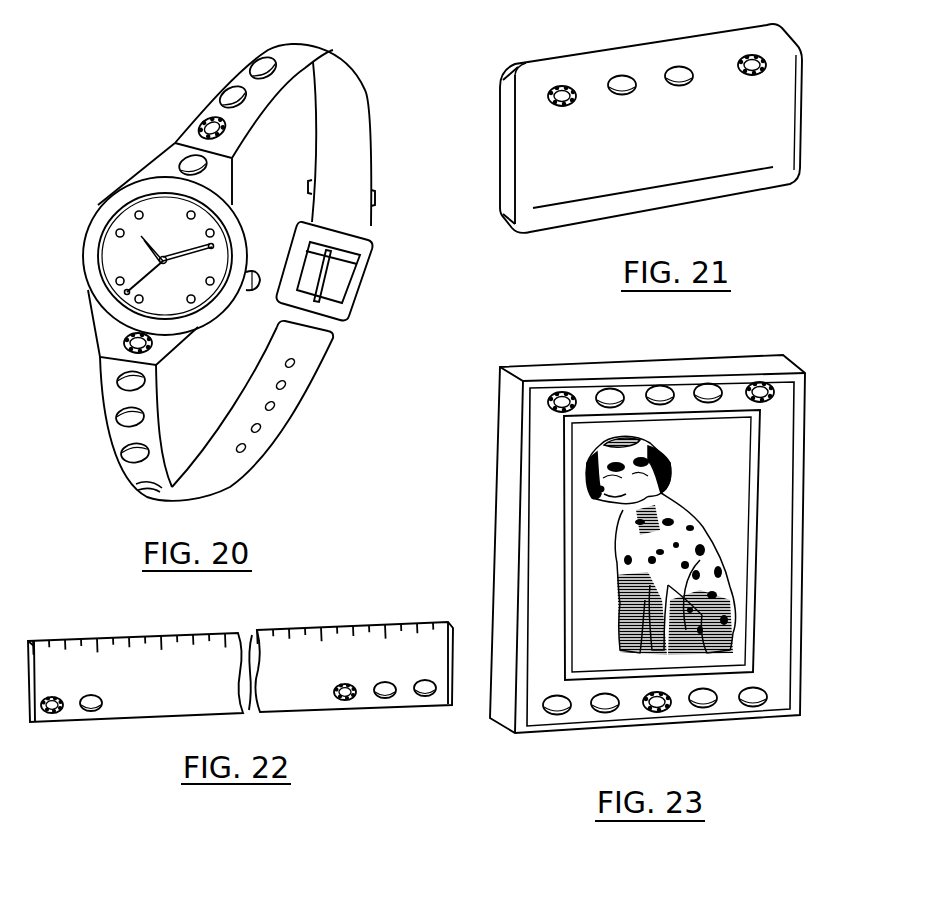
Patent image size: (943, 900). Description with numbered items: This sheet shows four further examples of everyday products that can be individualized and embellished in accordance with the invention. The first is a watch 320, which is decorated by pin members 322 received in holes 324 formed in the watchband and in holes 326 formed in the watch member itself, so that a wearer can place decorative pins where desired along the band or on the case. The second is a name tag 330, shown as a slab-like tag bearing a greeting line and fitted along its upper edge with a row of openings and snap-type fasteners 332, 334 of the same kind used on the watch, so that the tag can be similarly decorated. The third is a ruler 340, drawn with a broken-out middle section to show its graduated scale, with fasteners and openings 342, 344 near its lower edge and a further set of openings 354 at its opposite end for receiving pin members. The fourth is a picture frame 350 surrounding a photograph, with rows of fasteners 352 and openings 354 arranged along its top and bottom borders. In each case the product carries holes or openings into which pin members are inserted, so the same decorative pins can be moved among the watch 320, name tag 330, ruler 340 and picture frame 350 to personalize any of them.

In FIG. 20, the watch 320 is at (92, 264).
In FIG. 20, the pin members 322 is at (125, 415).
In FIG. 20, the holes in the watchband 324 is at (200, 124).
In FIG. 20, the holes in the watch member 326 is at (180, 164).
In FIG. 21, the name tag 330 is at (530, 180).
In FIG. 21, the snap fastener on name tag 332 is at (565, 86).
In FIG. 21, the apertures in name tag 334 is at (680, 70).
In FIG. 22, the ruler 340 is at (53, 668).
In FIG. 22, the snap fasteners on ruler 342 is at (55, 712).
In FIG. 22, the aperture in ruler 344 is at (90, 711).
In FIG. 23, the picture frame 350 is at (540, 490).
In FIG. 23, the snap fasteners on picture frame 352 is at (562, 392).
In FIG. 22, the apertures 354 is at (386, 698).
In FIG. 23, the apertures 354 is at (708, 390).